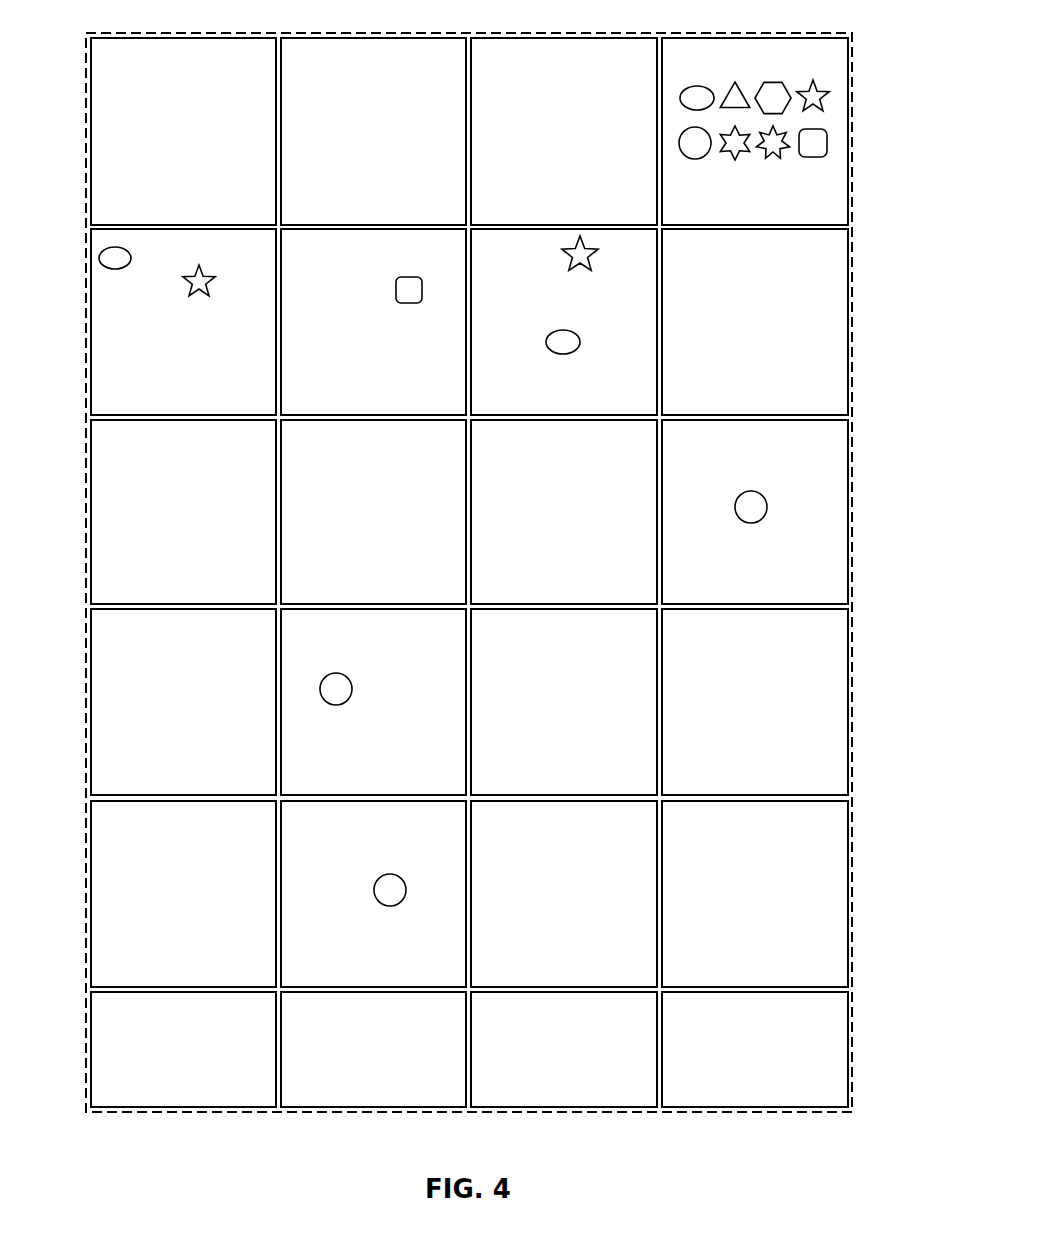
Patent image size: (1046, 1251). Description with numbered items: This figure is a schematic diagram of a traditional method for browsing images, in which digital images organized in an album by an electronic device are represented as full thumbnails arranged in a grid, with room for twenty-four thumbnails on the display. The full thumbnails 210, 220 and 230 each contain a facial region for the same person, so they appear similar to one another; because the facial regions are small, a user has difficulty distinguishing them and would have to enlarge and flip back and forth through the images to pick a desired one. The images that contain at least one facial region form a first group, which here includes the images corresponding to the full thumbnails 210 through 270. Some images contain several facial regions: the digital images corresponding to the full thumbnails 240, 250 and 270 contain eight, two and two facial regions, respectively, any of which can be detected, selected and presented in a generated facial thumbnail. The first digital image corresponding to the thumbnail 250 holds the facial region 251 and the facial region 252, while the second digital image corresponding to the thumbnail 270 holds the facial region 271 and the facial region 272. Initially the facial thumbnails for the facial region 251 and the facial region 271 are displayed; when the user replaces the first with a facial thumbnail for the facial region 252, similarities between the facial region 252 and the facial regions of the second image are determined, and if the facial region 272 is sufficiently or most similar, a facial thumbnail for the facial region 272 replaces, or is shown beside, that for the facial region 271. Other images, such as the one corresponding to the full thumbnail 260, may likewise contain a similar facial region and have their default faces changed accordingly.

The full thumbnail 210 is at (277, 686).
The full thumbnail 220 is at (283, 873).
The full thumbnail 230 is at (850, 497).
The full thumbnail 240 is at (842, 50).
The full thumbnail 250 is at (89, 228).
The facial region 251 is at (99, 258).
The facial region 252 is at (192, 293).
The full thumbnail 260 is at (463, 393).
The full thumbnail 270 is at (658, 303).
The facial region 271 is at (597, 252).
The facial region 272 is at (580, 342).